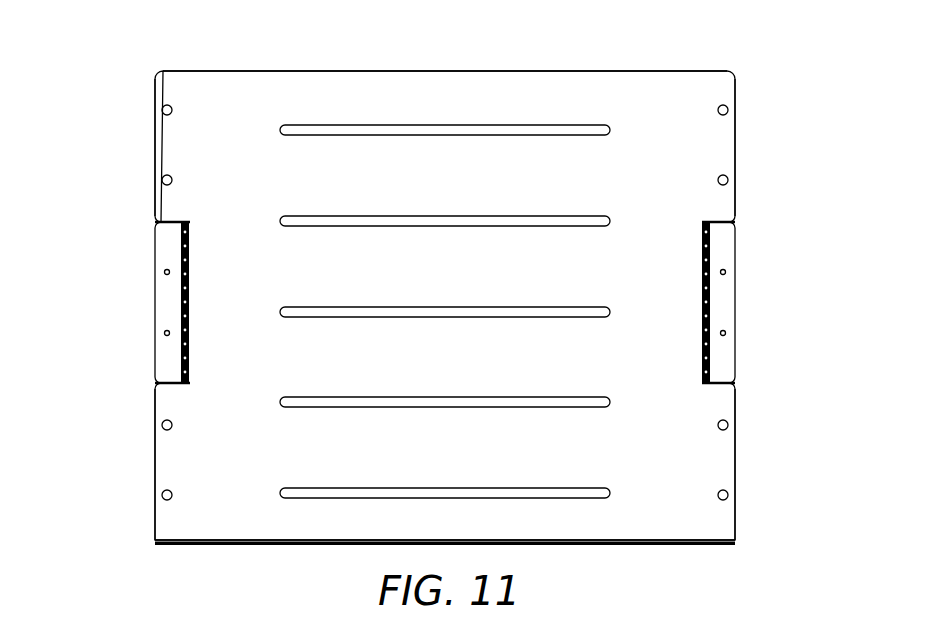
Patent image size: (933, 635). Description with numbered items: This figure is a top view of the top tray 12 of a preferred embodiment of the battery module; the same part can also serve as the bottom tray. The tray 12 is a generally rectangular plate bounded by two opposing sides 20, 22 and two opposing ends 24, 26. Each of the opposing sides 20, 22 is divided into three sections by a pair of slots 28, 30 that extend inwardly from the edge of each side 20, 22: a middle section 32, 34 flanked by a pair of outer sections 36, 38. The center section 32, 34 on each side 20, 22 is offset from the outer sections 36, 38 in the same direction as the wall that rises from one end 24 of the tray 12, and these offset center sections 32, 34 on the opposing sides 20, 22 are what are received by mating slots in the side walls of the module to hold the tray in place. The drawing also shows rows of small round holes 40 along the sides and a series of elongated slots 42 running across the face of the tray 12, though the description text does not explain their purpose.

The top tray 12 is at (815, 95).
The first opposing side 20 is at (135, 305).
The second opposing side 22 is at (753, 303).
The first opposing end 24 is at (590, 545).
The second opposing end 26 is at (458, 71).
The first slot 28 is at (160, 222).
The second slot 30 is at (729, 222).
The middle section of first side 32 is at (170, 303).
The middle section of second side 34 is at (728, 294).
The outer sections of first side 36 is at (172, 152).
The outer sections of second side 38 is at (716, 152).
The mounting holes 40 is at (162, 110).
The slots 42 is at (457, 226).